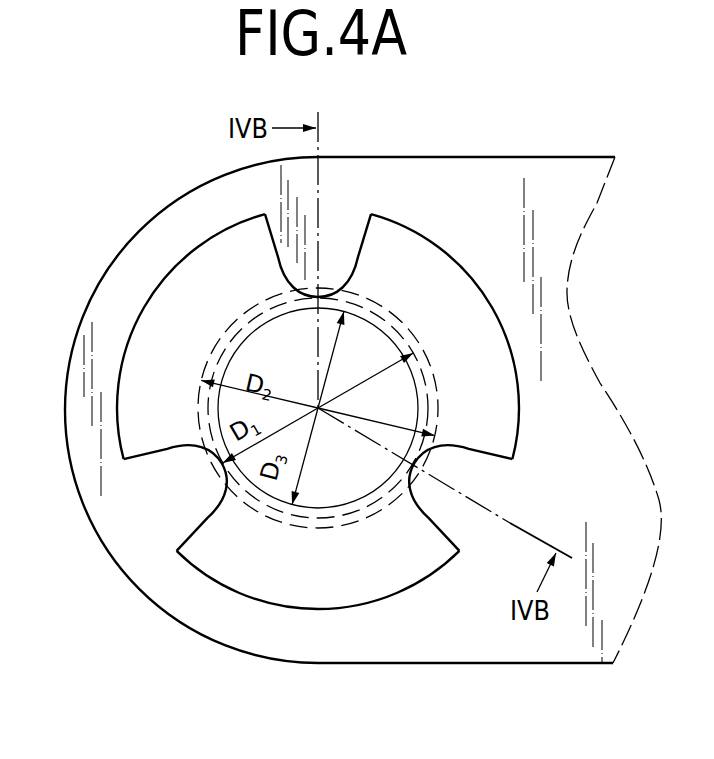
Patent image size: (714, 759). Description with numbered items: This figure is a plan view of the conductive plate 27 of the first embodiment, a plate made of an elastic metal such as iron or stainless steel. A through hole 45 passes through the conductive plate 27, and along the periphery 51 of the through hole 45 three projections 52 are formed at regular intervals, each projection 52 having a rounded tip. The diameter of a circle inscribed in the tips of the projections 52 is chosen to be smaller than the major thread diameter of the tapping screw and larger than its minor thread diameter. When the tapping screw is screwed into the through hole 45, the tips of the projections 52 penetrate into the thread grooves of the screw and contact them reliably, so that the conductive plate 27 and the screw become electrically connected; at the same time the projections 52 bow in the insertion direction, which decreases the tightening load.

The conductive plate 27 is at (482, 156).
The through hole 45 is at (192, 293).
The periphery 51 is at (313, 612).
The projections 52 is at (346, 231).